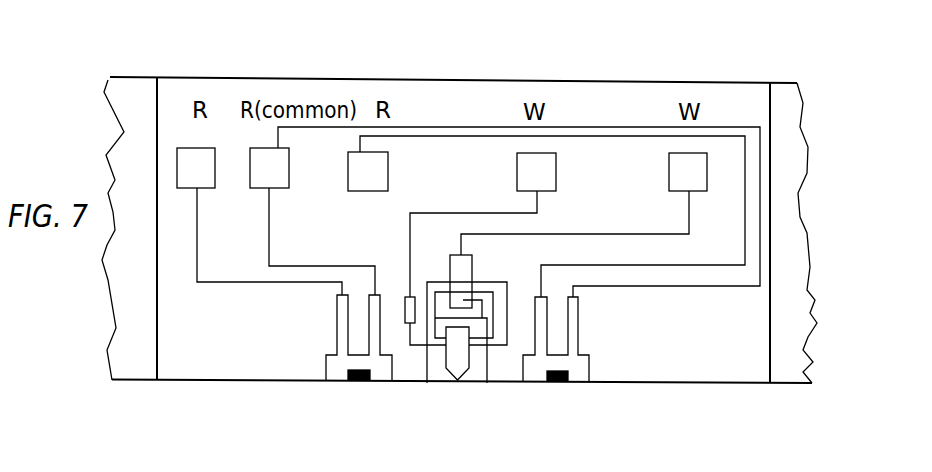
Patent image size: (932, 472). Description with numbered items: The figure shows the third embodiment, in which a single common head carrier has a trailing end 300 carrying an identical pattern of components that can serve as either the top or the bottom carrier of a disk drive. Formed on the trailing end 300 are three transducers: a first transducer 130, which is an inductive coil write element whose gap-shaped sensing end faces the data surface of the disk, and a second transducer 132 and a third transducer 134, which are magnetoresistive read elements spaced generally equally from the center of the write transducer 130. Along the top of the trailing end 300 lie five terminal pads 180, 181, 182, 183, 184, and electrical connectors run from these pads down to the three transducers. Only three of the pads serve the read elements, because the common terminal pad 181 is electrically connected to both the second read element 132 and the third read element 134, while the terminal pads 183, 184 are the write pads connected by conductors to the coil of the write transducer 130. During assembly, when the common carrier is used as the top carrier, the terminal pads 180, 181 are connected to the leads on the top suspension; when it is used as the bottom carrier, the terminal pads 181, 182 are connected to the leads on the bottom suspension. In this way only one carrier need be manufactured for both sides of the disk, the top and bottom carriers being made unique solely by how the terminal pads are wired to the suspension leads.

The terminal pad 180 is at (189, 158).
The common terminal pad 181 is at (255, 162).
The terminal pad 182 is at (361, 170).
The terminal pad 183 is at (543, 158).
The terminal pad 184 is at (702, 167).
The first transducer 130 is at (433, 373).
The second transducer 132 is at (332, 375).
The third transducer 134 is at (572, 373).
The trailing end 300 is at (740, 323).